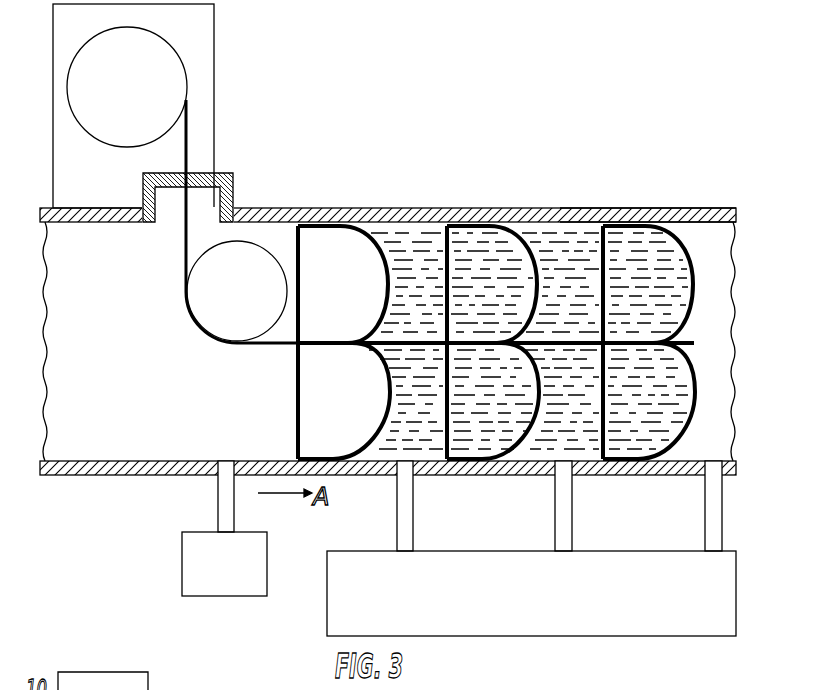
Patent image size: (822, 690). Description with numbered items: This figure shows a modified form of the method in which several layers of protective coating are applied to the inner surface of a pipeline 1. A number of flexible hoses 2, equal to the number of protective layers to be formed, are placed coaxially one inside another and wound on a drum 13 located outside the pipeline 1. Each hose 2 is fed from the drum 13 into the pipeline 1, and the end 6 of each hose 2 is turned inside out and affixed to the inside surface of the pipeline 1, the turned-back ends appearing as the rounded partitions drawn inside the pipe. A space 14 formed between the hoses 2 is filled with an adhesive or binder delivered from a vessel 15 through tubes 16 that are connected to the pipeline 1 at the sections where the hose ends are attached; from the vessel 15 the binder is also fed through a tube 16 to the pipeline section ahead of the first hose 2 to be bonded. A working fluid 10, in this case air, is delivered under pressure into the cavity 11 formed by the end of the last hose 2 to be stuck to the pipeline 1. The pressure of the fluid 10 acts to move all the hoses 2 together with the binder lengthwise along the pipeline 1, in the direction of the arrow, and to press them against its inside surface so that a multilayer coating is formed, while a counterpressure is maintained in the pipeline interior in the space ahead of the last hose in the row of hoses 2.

The pipeline 1 is at (593, 215).
The flexible hose 2 is at (190, 128).
The end of the flexible hose 6 is at (297, 248).
The fluid 10 is at (130, 253).
The cavity 11 is at (343, 245).
The drum 13 is at (171, 66).
The space between the hoses 14 is at (425, 240).
The vessel 15 is at (343, 597).
The tube 16 is at (405, 540).